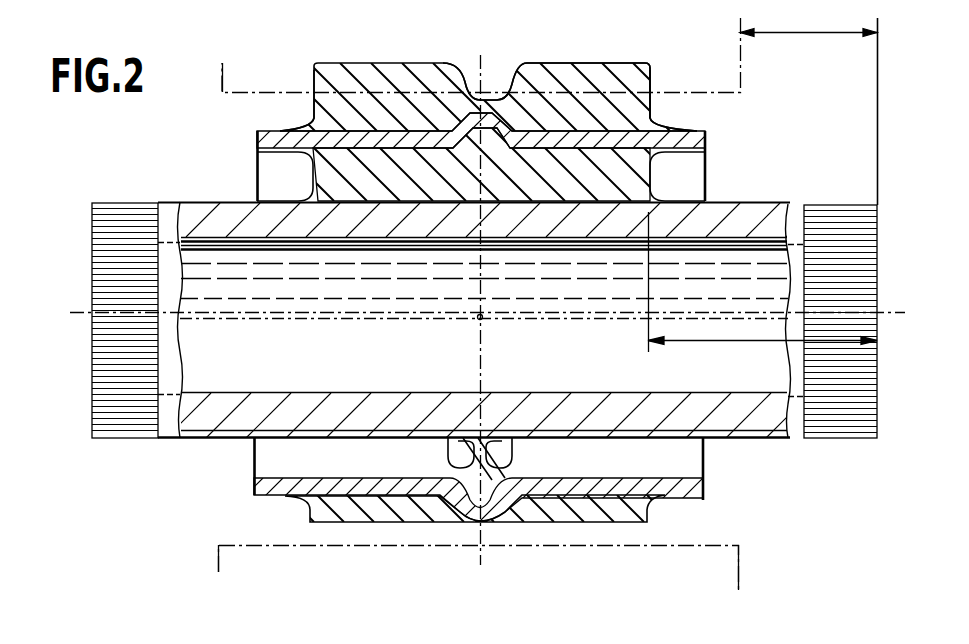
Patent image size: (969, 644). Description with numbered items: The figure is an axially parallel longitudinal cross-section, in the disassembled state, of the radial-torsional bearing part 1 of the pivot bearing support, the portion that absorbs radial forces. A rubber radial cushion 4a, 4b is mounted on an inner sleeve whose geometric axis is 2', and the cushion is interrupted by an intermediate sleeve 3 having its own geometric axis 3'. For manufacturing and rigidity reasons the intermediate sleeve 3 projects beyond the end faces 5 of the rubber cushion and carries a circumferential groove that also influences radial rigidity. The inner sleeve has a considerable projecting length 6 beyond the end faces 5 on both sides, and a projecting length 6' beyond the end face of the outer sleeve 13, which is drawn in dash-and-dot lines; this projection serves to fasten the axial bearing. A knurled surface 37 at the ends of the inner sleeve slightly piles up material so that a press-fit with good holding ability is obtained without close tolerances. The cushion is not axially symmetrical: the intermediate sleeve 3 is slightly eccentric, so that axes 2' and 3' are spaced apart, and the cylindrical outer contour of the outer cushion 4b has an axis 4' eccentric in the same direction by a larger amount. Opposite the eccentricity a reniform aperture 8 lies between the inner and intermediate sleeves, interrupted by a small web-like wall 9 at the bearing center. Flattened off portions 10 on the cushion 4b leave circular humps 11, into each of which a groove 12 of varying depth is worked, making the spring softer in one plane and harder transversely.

The radial-torsional bearing part 1 is at (699, 127).
The geometric axis of inner sleeve 2' is at (487, 333).
The intermediate sleeve 3 is at (479, 157).
The geometric axis of intermediate sleeve 3' is at (484, 293).
The axis of cylinder surface of outer radial cushion 4' is at (484, 298).
The inner radial cushion 4a is at (620, 180).
The outer radial cushion 4b is at (640, 68).
The end faces of rubber cushion 5 is at (316, 68).
The projecting length of inner sleeve 6 is at (762, 290).
The projecting length relative to outer sleeve end face 6' is at (550, 105).
The reniform aperture 8 is at (425, 445).
The intermediate web-like wall 9 is at (458, 448).
The flattened off portions 10 is at (354, 523).
The circularly shaped humps 11 is at (558, 68).
The groove 12 is at (470, 92).
The outer sleeve 13 is at (383, 92).
The knurled surface 37 is at (143, 201).